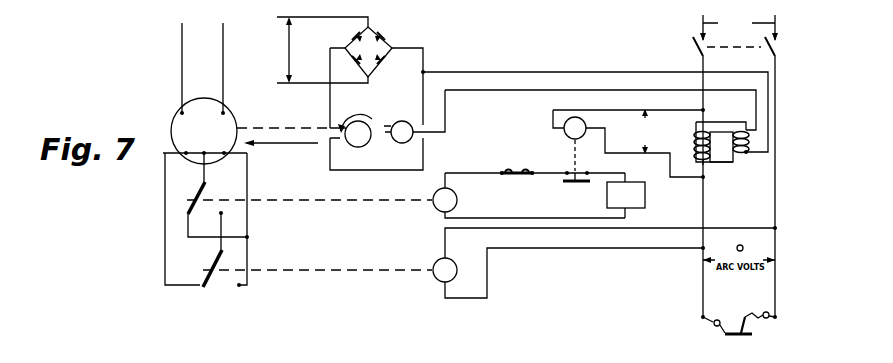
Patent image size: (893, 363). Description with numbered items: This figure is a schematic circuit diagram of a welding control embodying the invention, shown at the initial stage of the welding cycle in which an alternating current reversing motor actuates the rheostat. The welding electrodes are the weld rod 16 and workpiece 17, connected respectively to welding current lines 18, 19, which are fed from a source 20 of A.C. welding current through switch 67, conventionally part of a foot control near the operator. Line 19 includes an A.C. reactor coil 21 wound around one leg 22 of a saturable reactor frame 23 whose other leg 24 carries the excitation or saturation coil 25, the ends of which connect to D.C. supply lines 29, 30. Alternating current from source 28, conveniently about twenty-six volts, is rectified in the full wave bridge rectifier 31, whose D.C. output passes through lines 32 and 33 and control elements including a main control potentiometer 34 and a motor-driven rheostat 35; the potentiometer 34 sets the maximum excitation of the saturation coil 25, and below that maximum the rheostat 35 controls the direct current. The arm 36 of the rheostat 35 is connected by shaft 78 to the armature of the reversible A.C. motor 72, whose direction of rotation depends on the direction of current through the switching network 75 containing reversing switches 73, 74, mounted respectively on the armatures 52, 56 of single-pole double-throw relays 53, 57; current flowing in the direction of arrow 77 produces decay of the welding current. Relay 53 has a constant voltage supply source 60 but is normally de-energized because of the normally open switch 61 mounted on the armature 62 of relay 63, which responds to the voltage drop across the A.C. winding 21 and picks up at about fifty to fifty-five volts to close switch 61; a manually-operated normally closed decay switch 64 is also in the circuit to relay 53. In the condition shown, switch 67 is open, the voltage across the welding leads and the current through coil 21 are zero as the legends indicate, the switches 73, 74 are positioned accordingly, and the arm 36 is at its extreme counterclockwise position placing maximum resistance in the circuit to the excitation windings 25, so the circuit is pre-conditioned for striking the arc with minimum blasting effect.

The weld rod 16 is at (745, 321).
The workpiece 17 is at (752, 337).
The welding current line 18 is at (777, 300).
The welding current line 19 is at (702, 283).
The source of A.C. welding current 20 is at (752, 23).
The A.C. reactor coil 21 is at (697, 136).
The leg of saturable reactor frame 22 is at (711, 163).
The saturable reactor frame 23 is at (723, 128).
The leg of saturable reactor frame 24 is at (741, 163).
The saturation coil 25 is at (760, 165).
The alternating current source 28 is at (283, 72).
The D.C. supply line 29 is at (553, 73).
The D.C. supply line 30 is at (552, 92).
The full wave bridge rectifier 31 is at (383, 33).
The line 32 is at (423, 93).
The line 33 is at (330, 97).
The main control potentiometer 34 is at (414, 140).
The motor-driven rheostat 35 is at (366, 145).
The rheostat arm 36 is at (372, 120).
The relay armature 52 is at (346, 215).
The relay 53 is at (433, 206).
The relay armature 56 is at (339, 270).
The relay 57 is at (433, 263).
The constant voltage supply source 60 is at (645, 200).
The normally open switch 61 is at (575, 183).
The armature of relay 63 62 is at (570, 146).
The relay 63 is at (563, 131).
The decay switch 64 is at (519, 177).
The switch 67 is at (749, 52).
The reversible A.C. motor 72 is at (172, 119).
The reversing switch 73 is at (198, 198).
The reversing switch 74 is at (207, 270).
The switching network 75 is at (157, 234).
The arrow 77 is at (283, 143).
The shaft 78 is at (256, 128).